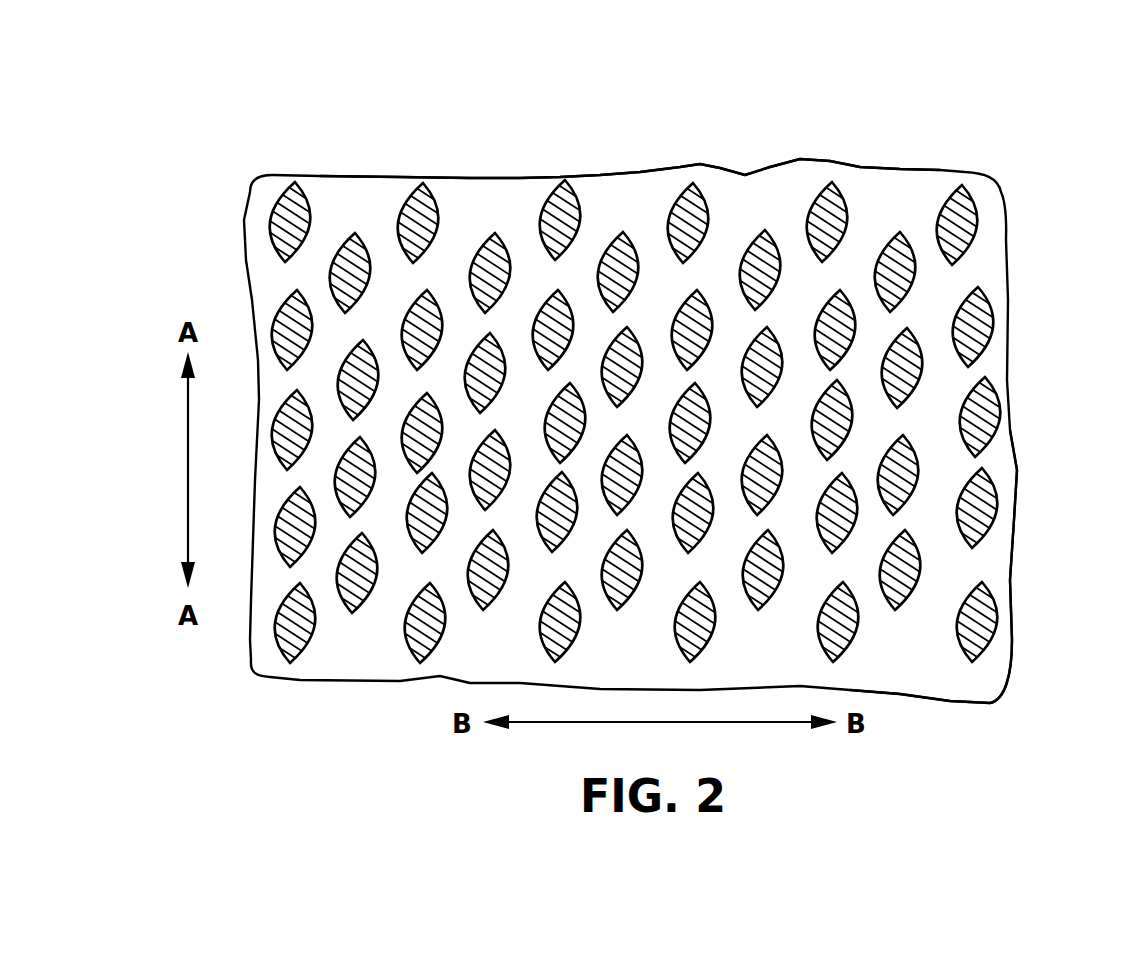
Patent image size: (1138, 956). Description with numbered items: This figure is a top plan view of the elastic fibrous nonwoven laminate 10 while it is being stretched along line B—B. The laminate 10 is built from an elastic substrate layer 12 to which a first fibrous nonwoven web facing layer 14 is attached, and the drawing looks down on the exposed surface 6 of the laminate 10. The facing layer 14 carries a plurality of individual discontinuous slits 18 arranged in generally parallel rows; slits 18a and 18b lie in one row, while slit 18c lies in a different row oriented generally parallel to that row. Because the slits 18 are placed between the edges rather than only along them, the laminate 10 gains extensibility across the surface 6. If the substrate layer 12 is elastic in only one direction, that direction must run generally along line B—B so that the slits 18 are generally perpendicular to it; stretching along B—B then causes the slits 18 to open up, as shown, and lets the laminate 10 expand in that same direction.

The elastic fibrous nonwoven laminate 10 is at (1042, 230).
The exposed surface 6 is at (762, 191).
The first fibrous nonwoven web facing layer 14 is at (1000, 571).
The elastic substrate layer 12 is at (555, 214).
The slit 18 is at (272, 338).
The slit 18a is at (903, 251).
The slit 18b is at (924, 368).
The slit 18c is at (994, 346).